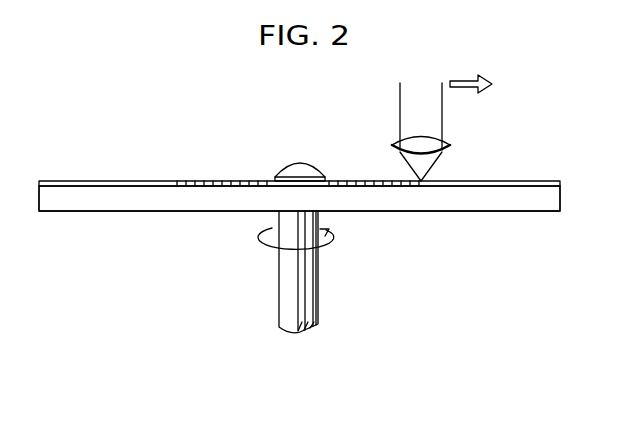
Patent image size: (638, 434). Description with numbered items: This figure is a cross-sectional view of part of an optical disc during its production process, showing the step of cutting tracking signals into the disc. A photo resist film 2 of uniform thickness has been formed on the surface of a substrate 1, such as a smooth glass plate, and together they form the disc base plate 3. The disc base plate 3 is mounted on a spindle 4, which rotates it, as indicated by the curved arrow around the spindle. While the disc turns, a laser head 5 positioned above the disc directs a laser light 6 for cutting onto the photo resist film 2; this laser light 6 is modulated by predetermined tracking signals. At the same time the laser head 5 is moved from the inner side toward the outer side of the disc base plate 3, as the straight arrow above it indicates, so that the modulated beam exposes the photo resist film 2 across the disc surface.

The substrate 1 is at (497, 200).
The photo resist film 2 is at (494, 182).
The disc base plate 3 is at (550, 177).
The spindle 4 is at (308, 285).
The laser head 5 is at (428, 146).
The laser light 6 is at (405, 164).